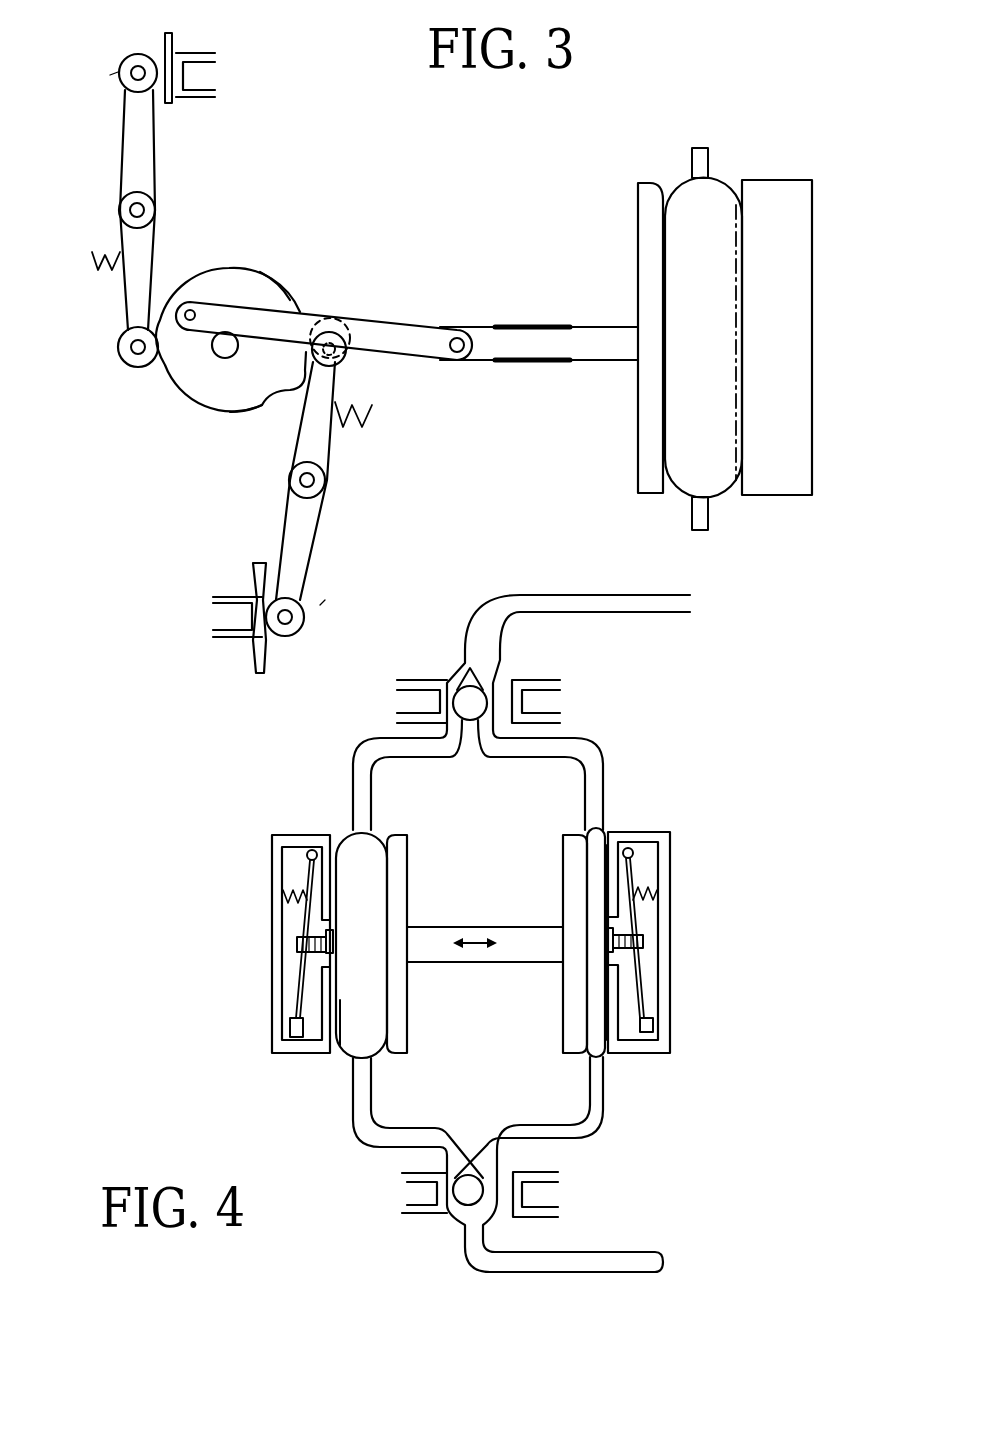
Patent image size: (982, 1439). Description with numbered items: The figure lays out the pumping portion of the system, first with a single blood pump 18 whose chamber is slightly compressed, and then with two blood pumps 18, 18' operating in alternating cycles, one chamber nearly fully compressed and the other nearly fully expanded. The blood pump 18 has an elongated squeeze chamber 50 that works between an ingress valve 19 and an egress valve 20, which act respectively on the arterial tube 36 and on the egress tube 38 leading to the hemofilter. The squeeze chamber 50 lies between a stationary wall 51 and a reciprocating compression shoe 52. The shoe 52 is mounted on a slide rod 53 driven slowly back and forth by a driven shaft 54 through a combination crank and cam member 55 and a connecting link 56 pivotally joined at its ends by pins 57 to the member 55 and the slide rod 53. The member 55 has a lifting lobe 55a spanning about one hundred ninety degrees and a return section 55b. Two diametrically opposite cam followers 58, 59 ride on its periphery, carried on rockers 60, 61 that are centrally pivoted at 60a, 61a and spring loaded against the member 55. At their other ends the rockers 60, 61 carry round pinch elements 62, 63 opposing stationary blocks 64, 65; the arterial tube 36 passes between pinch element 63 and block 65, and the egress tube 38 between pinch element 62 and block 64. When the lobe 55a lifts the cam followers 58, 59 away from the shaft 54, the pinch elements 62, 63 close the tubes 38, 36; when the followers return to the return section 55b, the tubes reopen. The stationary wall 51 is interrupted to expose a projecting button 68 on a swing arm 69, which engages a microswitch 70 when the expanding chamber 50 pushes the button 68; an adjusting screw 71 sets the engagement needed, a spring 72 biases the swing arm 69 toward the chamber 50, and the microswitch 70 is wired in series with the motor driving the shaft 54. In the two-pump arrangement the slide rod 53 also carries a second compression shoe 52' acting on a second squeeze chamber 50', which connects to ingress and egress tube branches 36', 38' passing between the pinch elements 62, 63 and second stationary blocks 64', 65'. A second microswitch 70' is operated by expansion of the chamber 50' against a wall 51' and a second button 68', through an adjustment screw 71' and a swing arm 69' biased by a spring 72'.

In FIG. 3, the blood pump 18 is at (777, 303).
In FIG. 4, the blood pump 18 is at (669, 909).
In FIG. 4, the second blood pump 18' is at (344, 766).
In FIG. 3, the ingress valve 19 is at (325, 600).
In FIG. 3, the egress valve 20 is at (110, 75).
In FIG. 3, the arterial tube 36 is at (501, 614).
In FIG. 4, the arterial tube 36 is at (558, 1194).
In FIG. 4, the ingress tube branch 36' is at (421, 1165).
In FIG. 3, the egress tube 38 is at (436, 105).
In FIG. 4, the egress tube 38 is at (545, 684).
In FIG. 4, the egress tube branch 38' is at (416, 775).
In FIG. 3, the squeeze chamber 50 is at (703, 338).
In FIG. 4, the squeeze chamber 50 is at (561, 961).
In FIG. 4, the second squeeze chamber 50' is at (361, 945).
In FIG. 3, the stationary wall 51 is at (706, 342).
In FIG. 4, the stationary wall 51 is at (632, 902).
In FIG. 4, the wall 51' is at (318, 1062).
In FIG. 3, the compression shoe 52 is at (617, 338).
In FIG. 4, the compression shoe 52 is at (550, 944).
In FIG. 4, the second compression shoe 52' is at (427, 944).
In FIG. 3, the slide rod 53 is at (572, 343).
In FIG. 4, the slide rod 53 is at (512, 927).
In FIG. 3, the driven shaft 54 is at (215, 352).
In FIG. 3, the combination crank and cam member 55 is at (180, 410).
In FIG. 3, the lifting lobe 55a is at (268, 282).
In FIG. 3, the return section 55b is at (215, 413).
In FIG. 3, the connecting link 56 is at (398, 322).
In FIG. 3, the pins 57 is at (193, 310).
In FIG. 3, the cam follower 58 is at (128, 352).
In FIG. 3, the cam follower 59 is at (345, 358).
In FIG. 3, the rocker 60 is at (118, 135).
In FIG. 3, the pivot 60a is at (140, 212).
In FIG. 3, the rocker 61 is at (335, 462).
In FIG. 3, the pivot 61a is at (315, 485).
In FIG. 3, the pinch element 62 is at (140, 54).
In FIG. 4, the pinch element 62 is at (480, 690).
In FIG. 3, the pinch element 63 is at (302, 628).
In FIG. 3, the stationary block 64 is at (211, 49).
In FIG. 4, the stationary block 64 is at (551, 678).
In FIG. 4, the second stationary block 64' is at (421, 671).
In FIG. 3, the stationary block 65 is at (222, 653).
In FIG. 4, the stationary block 65 is at (371, 1193).
In FIG. 4, the second stationary block 65' is at (574, 1194).
In FIG. 4, the projecting button 68 is at (570, 895).
In FIG. 4, the second button 68' is at (354, 955).
In FIG. 4, the swing arm 69 is at (669, 941).
In FIG. 4, the swing arm 69' is at (270, 944).
In FIG. 4, the microswitch 70 is at (685, 1026).
In FIG. 4, the second microswitch 70' is at (256, 1026).
In FIG. 4, the adjusting screw 71 is at (672, 926).
In FIG. 4, the adjustment screw 71' is at (269, 926).
In FIG. 4, the spring 72 is at (677, 933).
In FIG. 4, the spring 72' is at (264, 931).